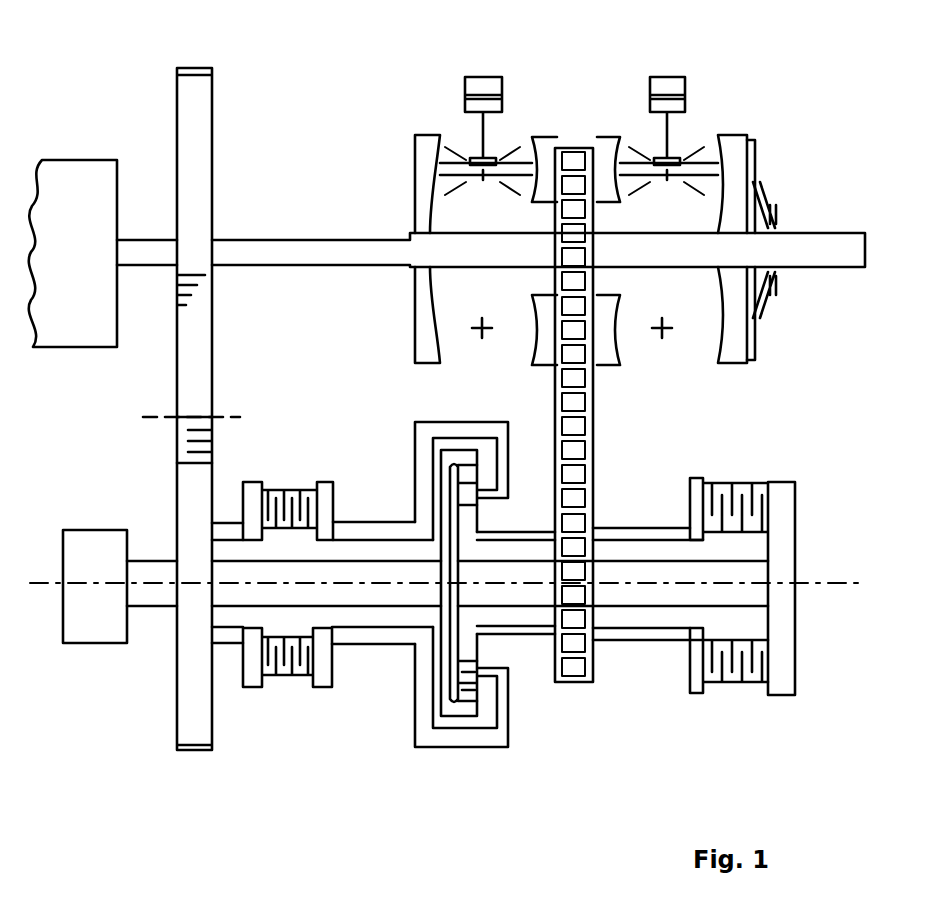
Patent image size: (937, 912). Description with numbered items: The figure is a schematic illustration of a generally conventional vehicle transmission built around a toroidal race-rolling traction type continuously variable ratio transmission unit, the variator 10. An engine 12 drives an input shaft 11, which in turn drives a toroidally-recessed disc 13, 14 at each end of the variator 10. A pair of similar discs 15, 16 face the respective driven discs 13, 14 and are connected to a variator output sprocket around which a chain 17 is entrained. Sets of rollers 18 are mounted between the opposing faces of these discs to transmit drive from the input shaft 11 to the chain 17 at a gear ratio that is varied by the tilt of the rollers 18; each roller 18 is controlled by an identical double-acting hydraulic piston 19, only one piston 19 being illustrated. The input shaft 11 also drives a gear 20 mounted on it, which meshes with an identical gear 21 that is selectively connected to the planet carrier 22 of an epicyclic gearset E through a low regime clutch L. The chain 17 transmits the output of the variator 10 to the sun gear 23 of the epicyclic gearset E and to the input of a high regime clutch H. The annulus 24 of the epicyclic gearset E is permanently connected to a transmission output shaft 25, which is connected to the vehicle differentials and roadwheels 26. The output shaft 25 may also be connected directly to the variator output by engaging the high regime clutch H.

The variator 10 is at (598, 187).
The input shaft 11 is at (337, 235).
The engine 12 is at (78, 148).
The toroidally-recessed disc 13 is at (415, 142).
The toroidally-recessed disc 14 is at (758, 152).
The disc 15 is at (548, 137).
The disc 16 is at (735, 135).
The chain 17 is at (595, 418).
The rollers 18 is at (483, 182).
The double-acting hydraulic piston 19 is at (474, 66).
The gear 20 is at (203, 128).
The gear 21 is at (208, 482).
The planet carrier 22 is at (455, 748).
The sun gear 23 is at (480, 658).
The annulus 24 is at (450, 480).
The transmission output shaft 25 is at (152, 572).
The vehicle differentials and roadwheels 26 is at (106, 592).
The low regime clutch L is at (298, 480).
The high regime clutch H is at (742, 478).
The epicyclic gearset E is at (447, 620).